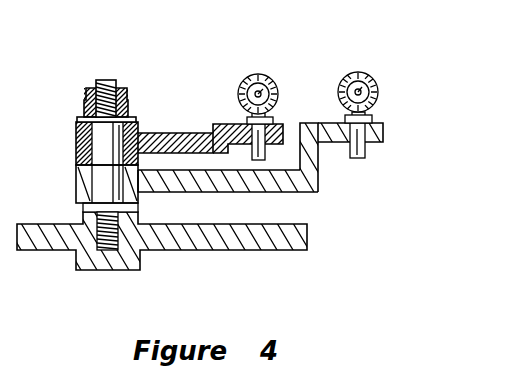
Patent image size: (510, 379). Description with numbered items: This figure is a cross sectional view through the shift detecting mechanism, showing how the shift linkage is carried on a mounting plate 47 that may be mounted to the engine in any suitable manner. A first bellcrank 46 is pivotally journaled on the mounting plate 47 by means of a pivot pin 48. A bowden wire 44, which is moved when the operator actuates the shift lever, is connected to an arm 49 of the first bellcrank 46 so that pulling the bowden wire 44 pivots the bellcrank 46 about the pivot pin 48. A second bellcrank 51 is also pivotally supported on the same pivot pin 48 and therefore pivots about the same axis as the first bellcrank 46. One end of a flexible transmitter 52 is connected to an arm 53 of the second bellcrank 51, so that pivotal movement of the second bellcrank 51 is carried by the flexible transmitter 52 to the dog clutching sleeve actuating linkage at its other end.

The bowden wire 44 is at (357, 75).
The first bellcrank 46 is at (296, 195).
The mounting plate 47 is at (182, 250).
The pivot pin 48 is at (108, 80).
The arm 49 is at (318, 170).
The second bellcrank 51 is at (182, 115).
The flexible transmitter 52 is at (250, 72).
The arm 53 is at (228, 122).